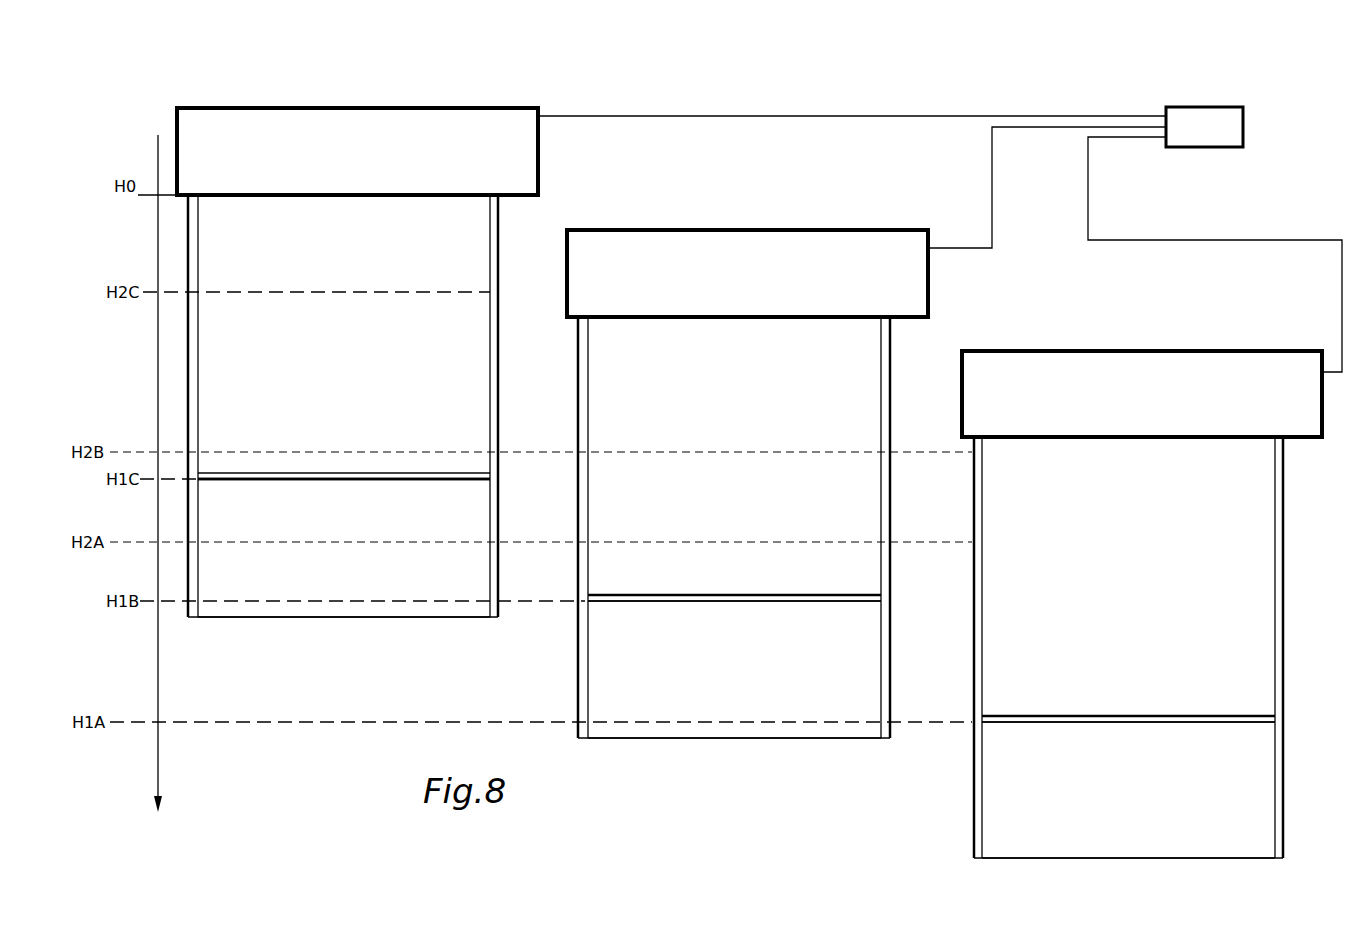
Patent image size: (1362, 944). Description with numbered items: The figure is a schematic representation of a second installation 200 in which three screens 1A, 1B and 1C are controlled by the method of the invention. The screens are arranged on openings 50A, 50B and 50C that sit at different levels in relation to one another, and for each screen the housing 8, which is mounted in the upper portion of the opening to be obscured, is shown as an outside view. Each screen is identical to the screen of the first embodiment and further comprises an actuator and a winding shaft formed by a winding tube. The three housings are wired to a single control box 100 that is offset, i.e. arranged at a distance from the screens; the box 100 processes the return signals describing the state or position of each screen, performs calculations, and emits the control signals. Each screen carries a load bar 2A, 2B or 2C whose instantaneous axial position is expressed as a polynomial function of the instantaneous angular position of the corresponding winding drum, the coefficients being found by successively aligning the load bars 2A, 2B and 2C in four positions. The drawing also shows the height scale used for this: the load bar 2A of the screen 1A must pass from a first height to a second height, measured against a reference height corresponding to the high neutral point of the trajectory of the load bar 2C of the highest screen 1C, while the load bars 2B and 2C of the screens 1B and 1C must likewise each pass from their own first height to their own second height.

The installation 200 is at (195, 57).
The control box 100 is at (1204, 127).
The screen 1A is at (1142, 580).
The screen 1B is at (747, 458).
The screen 1C is at (357, 338).
The housing 8 is at (749, 272).
The load bar 2A is at (1188, 723).
The load bar 2B is at (793, 602).
The load bar 2C is at (402, 481).
The opening 50A is at (1128, 790).
The opening 50B is at (734, 669).
The opening 50C is at (344, 548).